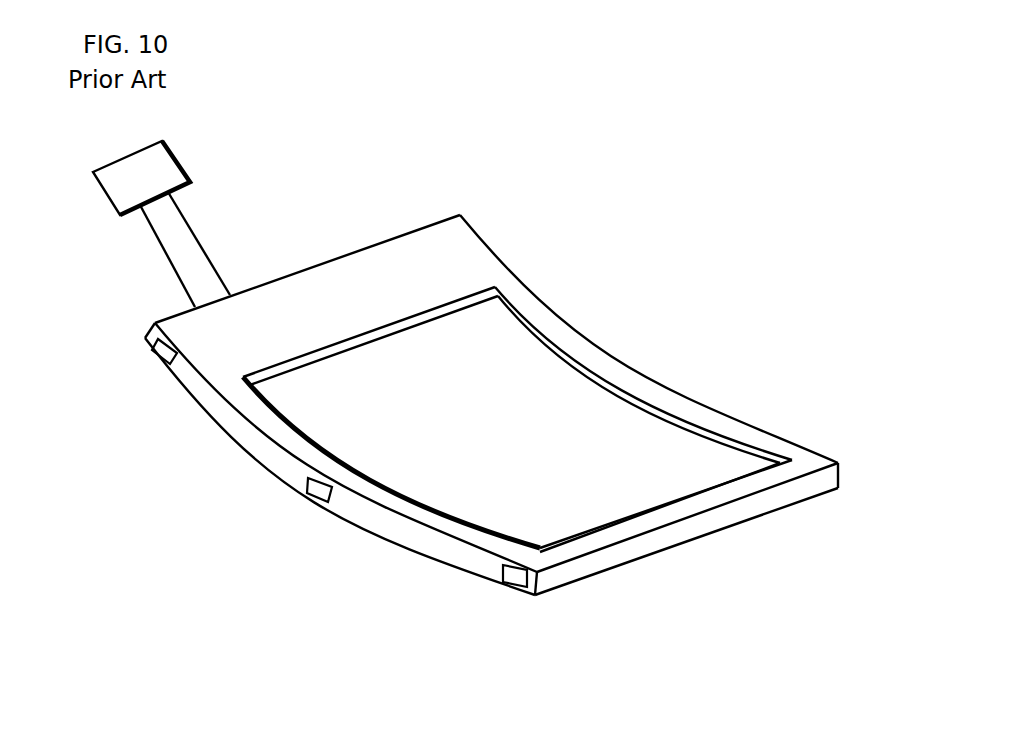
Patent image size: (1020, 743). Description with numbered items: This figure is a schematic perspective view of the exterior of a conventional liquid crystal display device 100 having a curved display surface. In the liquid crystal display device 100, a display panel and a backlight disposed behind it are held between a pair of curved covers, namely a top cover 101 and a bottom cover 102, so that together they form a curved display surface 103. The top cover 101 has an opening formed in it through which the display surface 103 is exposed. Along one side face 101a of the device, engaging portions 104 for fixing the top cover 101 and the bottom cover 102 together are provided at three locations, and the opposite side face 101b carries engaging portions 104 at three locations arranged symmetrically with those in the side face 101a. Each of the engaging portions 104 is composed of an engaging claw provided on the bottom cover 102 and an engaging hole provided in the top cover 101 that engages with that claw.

The liquid crystal display device 100 is at (610, 143).
The top cover 101 is at (475, 252).
The side face 101a is at (148, 338).
The side face 101b is at (548, 308).
The bottom cover 102 is at (630, 567).
The display surface 103 is at (653, 438).
The engaging portions 104 is at (503, 577).